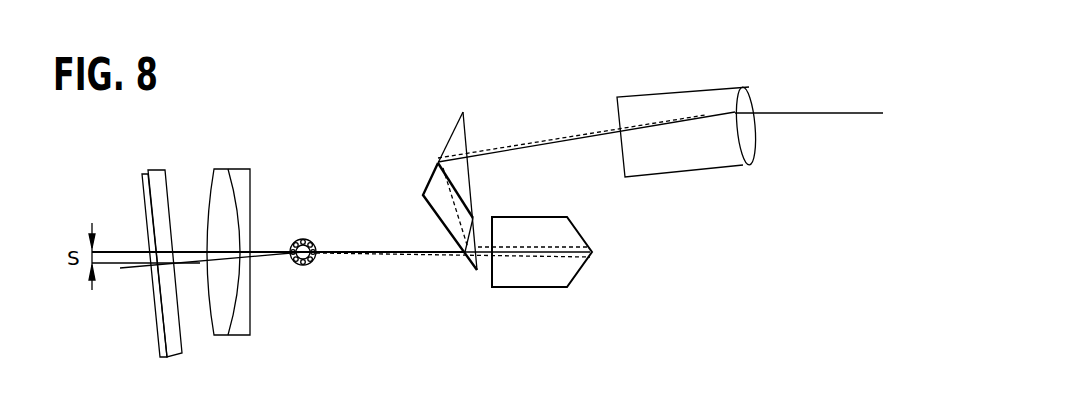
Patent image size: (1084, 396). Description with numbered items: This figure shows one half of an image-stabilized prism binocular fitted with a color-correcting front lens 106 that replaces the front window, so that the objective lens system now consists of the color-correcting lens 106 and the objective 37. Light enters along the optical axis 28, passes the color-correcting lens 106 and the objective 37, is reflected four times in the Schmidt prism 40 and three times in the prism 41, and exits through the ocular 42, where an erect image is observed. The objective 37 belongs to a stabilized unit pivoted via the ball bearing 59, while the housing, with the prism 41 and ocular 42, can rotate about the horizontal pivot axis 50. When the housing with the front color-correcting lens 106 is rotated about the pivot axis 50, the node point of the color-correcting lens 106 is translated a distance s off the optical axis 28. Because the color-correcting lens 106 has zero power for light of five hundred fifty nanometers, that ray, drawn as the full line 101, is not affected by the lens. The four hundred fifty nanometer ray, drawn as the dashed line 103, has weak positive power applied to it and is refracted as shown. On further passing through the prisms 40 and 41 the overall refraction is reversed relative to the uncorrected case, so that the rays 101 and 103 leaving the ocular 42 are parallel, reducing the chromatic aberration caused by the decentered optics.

The central light ray 28 is at (132, 248).
The color-correcting lens 106 is at (157, 170).
The objective 37 is at (223, 177).
The pivot axis 50 is at (306, 253).
The ball bearing 59 is at (313, 240).
The prism 41 is at (450, 128).
The 550 nm light ray 101 is at (528, 153).
The 450 nm light ray 103 is at (485, 152).
The Schmidt prism 40 is at (550, 288).
The ocular 42 is at (673, 173).